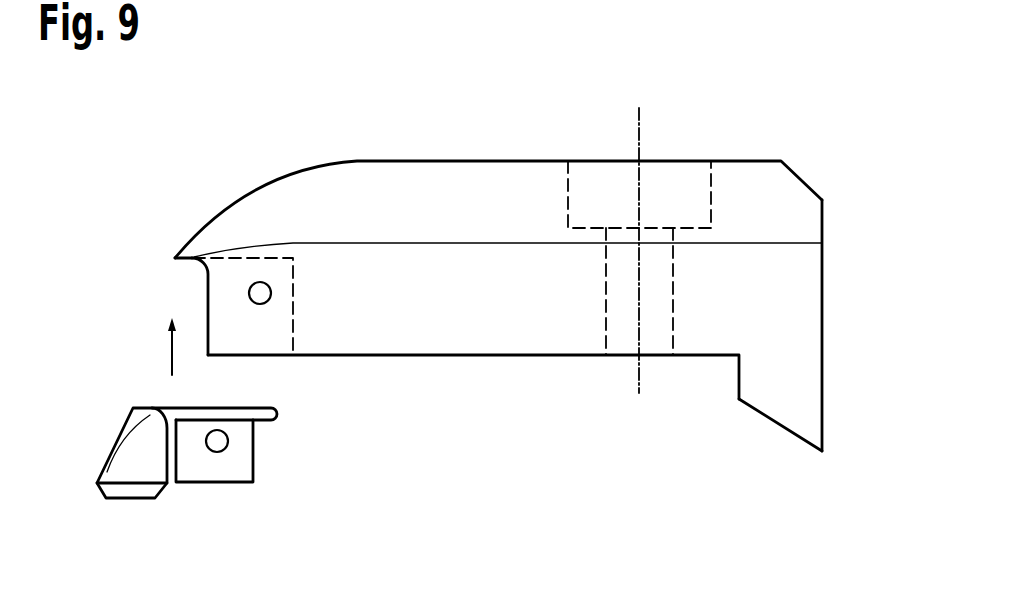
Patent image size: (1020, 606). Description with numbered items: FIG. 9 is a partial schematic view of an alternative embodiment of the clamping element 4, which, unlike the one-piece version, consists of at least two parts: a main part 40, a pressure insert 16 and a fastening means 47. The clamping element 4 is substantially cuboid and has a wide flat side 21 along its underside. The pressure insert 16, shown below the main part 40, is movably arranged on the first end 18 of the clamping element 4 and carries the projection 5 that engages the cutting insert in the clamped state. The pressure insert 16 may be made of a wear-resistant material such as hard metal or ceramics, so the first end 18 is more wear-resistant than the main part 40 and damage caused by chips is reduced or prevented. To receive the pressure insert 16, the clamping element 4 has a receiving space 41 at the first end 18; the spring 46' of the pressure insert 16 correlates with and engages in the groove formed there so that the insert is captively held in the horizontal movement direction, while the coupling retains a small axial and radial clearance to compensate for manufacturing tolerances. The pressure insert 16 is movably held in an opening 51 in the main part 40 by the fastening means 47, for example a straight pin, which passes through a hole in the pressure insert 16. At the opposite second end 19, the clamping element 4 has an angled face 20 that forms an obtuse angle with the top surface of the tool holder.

The clamping element 4 is at (424, 128).
The projection 5 is at (133, 492).
The pressure insert 16 is at (91, 403).
The first end 18 is at (113, 254).
The second end 19 is at (854, 489).
The angled face 20 is at (773, 423).
The wide flat side 21 is at (473, 357).
The main part 40 is at (423, 308).
The receiving space 41 is at (143, 306).
The spring 46' is at (262, 394).
The fastening means 47 is at (217, 441).
The opening 51 is at (260, 290).